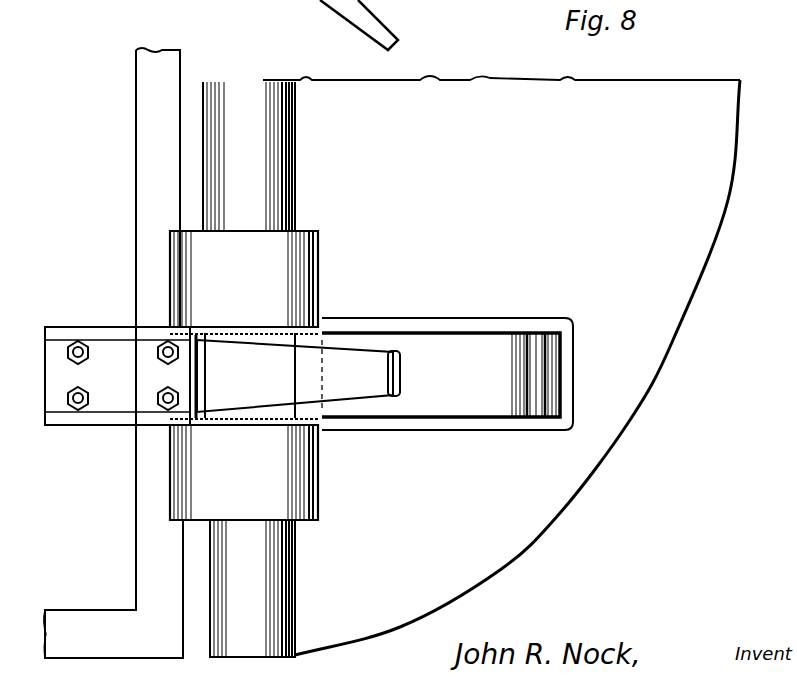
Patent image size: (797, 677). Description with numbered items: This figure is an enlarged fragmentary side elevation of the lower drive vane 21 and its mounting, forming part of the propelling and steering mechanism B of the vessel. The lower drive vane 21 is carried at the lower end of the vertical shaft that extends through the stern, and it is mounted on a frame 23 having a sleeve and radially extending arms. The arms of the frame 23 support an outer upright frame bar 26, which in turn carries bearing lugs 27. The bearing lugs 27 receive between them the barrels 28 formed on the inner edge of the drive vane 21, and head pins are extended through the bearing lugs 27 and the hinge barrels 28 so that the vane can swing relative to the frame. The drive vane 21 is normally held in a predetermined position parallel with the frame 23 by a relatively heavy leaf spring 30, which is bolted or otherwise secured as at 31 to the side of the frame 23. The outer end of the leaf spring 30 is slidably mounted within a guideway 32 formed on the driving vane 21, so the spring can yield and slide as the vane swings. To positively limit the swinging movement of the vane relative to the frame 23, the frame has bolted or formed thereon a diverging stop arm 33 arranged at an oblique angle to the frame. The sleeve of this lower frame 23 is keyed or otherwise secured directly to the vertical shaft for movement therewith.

The lower drive vane 21 is at (626, 88).
The frame 23 is at (88, 603).
The outer upright frame bar 26 is at (134, 479).
The bearing lugs 27 is at (300, 256).
The barrels 28 is at (274, 196).
The leaf spring 30 is at (497, 344).
The bolted securement 31 is at (150, 342).
The guideway 32 is at (440, 338).
The stop arm 33 is at (325, 348).
The propelling and steering mechanism B is at (430, 86).